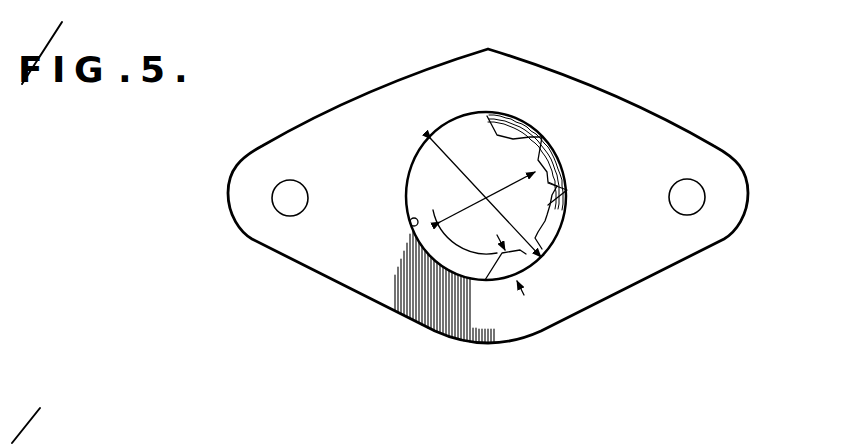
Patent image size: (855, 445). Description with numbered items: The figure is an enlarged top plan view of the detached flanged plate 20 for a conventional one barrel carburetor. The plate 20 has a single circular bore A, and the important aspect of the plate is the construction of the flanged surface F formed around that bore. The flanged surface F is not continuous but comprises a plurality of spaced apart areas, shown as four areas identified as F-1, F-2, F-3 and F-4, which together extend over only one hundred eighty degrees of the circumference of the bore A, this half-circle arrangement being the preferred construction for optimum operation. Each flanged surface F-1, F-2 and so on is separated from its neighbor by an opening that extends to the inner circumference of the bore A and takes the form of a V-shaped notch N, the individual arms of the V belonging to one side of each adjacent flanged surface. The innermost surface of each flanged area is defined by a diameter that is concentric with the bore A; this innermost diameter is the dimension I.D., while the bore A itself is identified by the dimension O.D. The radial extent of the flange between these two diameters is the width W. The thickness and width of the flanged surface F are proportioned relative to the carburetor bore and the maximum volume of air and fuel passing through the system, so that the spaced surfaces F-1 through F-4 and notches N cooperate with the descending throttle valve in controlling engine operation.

The plate 20 is at (365, 112).
The outer diameter O.D. is at (447, 154).
The inner diameter I.D. is at (436, 206).
The bore A is at (412, 228).
The flanged surface F is at (567, 156).
The flanged surface area F-1 is at (521, 122).
The flanged surface area F-2 is at (558, 140).
The flanged surface area F-3 is at (558, 216).
The flanged surface area F-4 is at (525, 254).
The V-shaped notch N is at (529, 152).
The width of the flange W is at (517, 260).